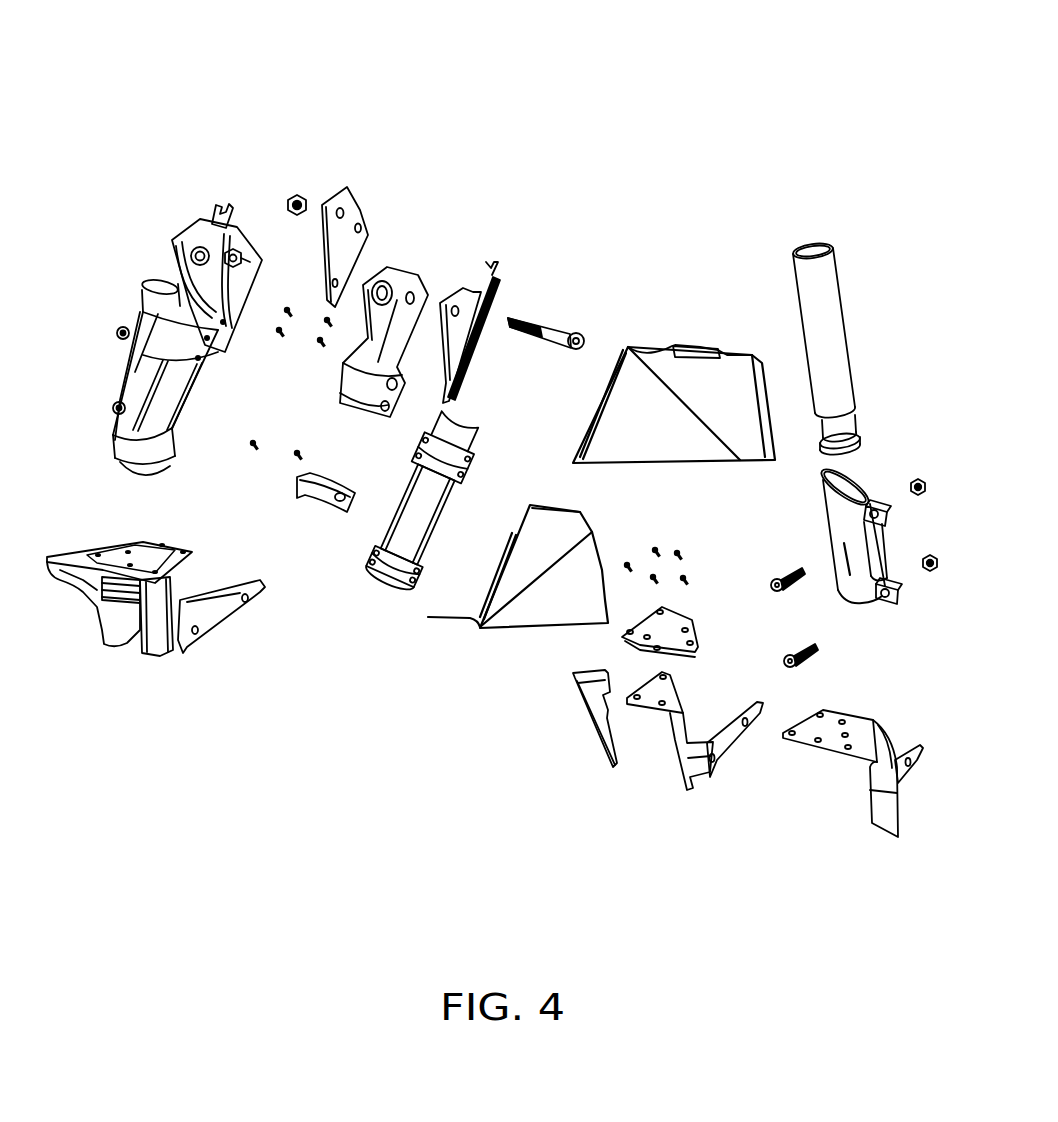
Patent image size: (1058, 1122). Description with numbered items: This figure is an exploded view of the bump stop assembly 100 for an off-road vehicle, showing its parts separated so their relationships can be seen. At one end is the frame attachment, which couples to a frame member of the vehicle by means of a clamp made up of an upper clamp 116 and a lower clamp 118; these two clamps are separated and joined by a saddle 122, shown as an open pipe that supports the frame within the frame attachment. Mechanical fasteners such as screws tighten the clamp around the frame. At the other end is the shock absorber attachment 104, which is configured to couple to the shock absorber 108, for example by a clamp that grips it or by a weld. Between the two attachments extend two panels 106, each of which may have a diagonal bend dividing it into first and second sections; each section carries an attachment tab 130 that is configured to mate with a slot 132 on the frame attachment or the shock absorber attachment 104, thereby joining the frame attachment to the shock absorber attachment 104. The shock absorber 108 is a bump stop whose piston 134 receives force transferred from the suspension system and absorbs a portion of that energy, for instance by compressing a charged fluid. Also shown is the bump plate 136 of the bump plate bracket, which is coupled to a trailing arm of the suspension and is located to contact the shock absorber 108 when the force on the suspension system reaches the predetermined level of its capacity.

The bump stop assembly 100 is at (935, 253).
The shock absorber attachment 104 is at (845, 517).
The panel 106 is at (680, 442).
The shock absorber 108 is at (826, 303).
The upper clamp 116 is at (365, 385).
The lower clamp 118 is at (297, 485).
The saddle 122 is at (407, 537).
The attachment tab 130 is at (747, 357).
The slot 132 is at (850, 560).
The piston 134 is at (838, 424).
The bump plate 136 is at (667, 627).